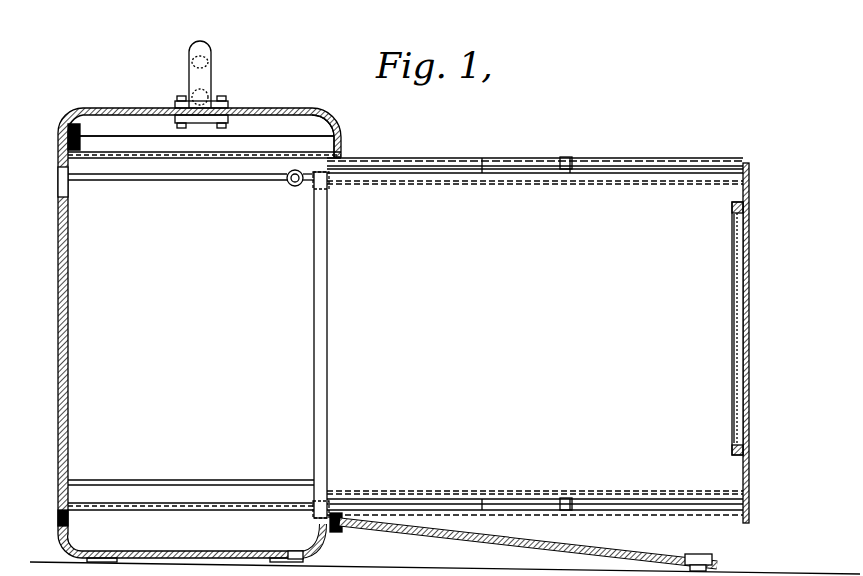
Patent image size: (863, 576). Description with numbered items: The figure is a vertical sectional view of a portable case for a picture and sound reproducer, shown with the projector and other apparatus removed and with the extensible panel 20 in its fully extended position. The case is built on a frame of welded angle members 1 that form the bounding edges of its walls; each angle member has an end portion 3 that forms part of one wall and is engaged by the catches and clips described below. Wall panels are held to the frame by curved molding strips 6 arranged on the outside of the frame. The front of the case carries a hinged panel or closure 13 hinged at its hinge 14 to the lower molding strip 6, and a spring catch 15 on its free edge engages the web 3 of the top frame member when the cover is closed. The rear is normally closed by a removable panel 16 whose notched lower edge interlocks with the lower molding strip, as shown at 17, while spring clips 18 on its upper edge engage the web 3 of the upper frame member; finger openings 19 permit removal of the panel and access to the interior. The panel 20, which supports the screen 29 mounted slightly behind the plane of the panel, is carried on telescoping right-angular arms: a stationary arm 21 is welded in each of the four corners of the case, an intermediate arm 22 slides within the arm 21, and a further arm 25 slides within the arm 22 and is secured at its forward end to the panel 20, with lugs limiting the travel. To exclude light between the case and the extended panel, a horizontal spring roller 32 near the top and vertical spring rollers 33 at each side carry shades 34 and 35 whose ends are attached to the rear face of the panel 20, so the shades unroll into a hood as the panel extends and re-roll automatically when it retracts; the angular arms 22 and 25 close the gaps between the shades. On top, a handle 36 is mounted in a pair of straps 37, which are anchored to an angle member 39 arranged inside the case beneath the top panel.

The angle members 1 is at (297, 539).
The end portion 3 is at (343, 160).
The molding strips 6 is at (326, 533).
The hinged panel or closure 13 is at (494, 540).
The leg pivot block 14 is at (345, 527).
The spring catch 15 is at (696, 556).
The removable panel 16 is at (59, 270).
The notch interlock 17 is at (69, 520).
The spring clips 18 is at (79, 148).
The finger openings 19 is at (59, 184).
The extensible panel 20 is at (749, 191).
The stationary arm 21 is at (175, 173).
The intermediate arm 22 is at (438, 186).
The arm 25 is at (636, 186).
The screen 29 is at (730, 318).
The spring roller 32 is at (290, 188).
The spring rollers 33 is at (314, 362).
The shade 34 is at (612, 166).
The shade 35 is at (705, 273).
The handle 36 is at (208, 80).
The straps 37 is at (222, 108).
The angle member 39 is at (147, 130).